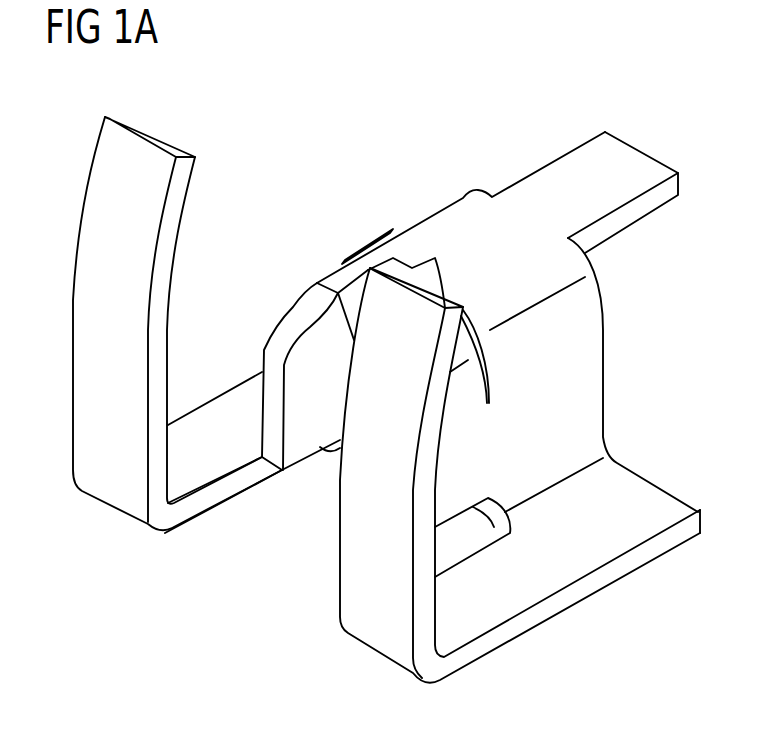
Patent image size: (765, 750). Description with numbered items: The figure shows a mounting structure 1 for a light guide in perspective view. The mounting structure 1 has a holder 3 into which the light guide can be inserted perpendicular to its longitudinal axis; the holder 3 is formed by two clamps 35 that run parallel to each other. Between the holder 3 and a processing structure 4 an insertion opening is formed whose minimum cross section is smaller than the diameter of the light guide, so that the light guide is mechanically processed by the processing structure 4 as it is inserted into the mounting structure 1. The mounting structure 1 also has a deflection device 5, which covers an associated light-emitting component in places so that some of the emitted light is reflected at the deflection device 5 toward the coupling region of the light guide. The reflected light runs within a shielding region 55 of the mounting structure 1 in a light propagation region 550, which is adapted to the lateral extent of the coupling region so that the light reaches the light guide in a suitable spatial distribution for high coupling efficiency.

The mounting structure 1 is at (322, 106).
The holder 3 is at (177, 198).
The clamps 35 is at (105, 173).
The processing structure 4 is at (325, 300).
The deflection device 5 is at (558, 170).
The shielding region 55 is at (590, 287).
The light propagation region 550 is at (312, 410).